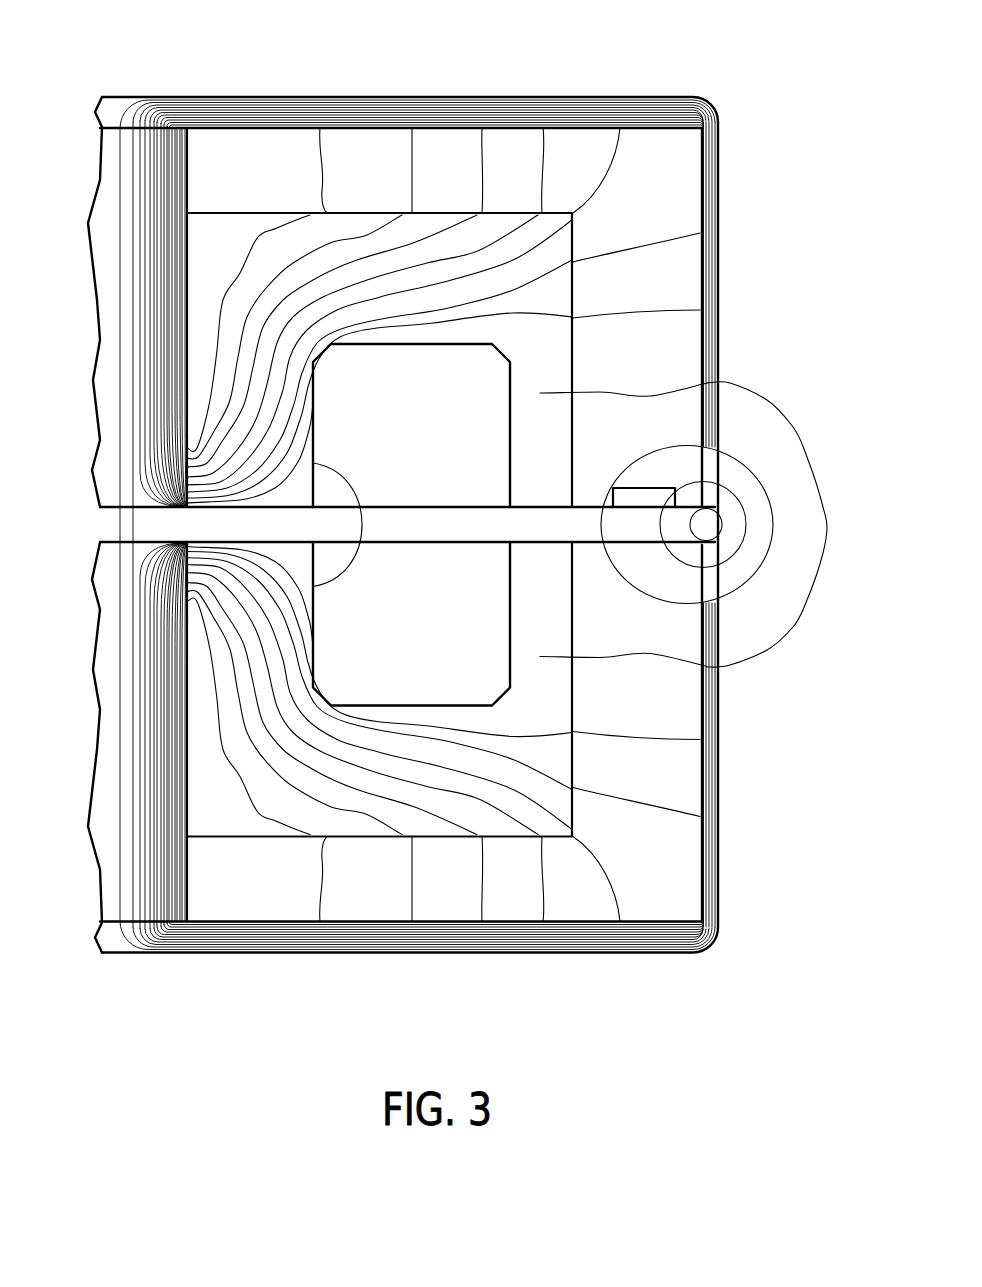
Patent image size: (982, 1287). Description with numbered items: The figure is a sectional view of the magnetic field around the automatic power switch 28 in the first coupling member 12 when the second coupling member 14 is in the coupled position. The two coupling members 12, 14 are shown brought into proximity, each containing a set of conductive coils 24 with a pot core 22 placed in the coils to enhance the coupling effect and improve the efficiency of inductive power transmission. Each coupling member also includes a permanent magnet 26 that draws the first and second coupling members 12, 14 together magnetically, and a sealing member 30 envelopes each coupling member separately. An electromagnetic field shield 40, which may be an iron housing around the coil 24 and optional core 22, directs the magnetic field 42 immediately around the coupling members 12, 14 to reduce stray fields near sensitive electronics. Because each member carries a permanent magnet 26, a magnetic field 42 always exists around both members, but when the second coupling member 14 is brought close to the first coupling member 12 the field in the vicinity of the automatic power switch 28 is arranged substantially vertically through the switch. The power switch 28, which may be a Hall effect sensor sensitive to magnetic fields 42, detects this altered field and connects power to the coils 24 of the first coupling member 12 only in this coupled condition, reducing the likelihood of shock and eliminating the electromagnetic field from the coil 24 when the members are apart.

The first coupling member 12 is at (594, 97).
The second coupling member 14 is at (594, 955).
The pot core 22 is at (288, 247).
The conductive coils 24 is at (458, 373).
The permanent magnet 26 is at (110, 388).
The automatic power switch 28 is at (628, 495).
The sealing member 30 is at (237, 525).
The electromagnetic field shield 40 is at (720, 149).
The magnetic field 42 is at (760, 657).